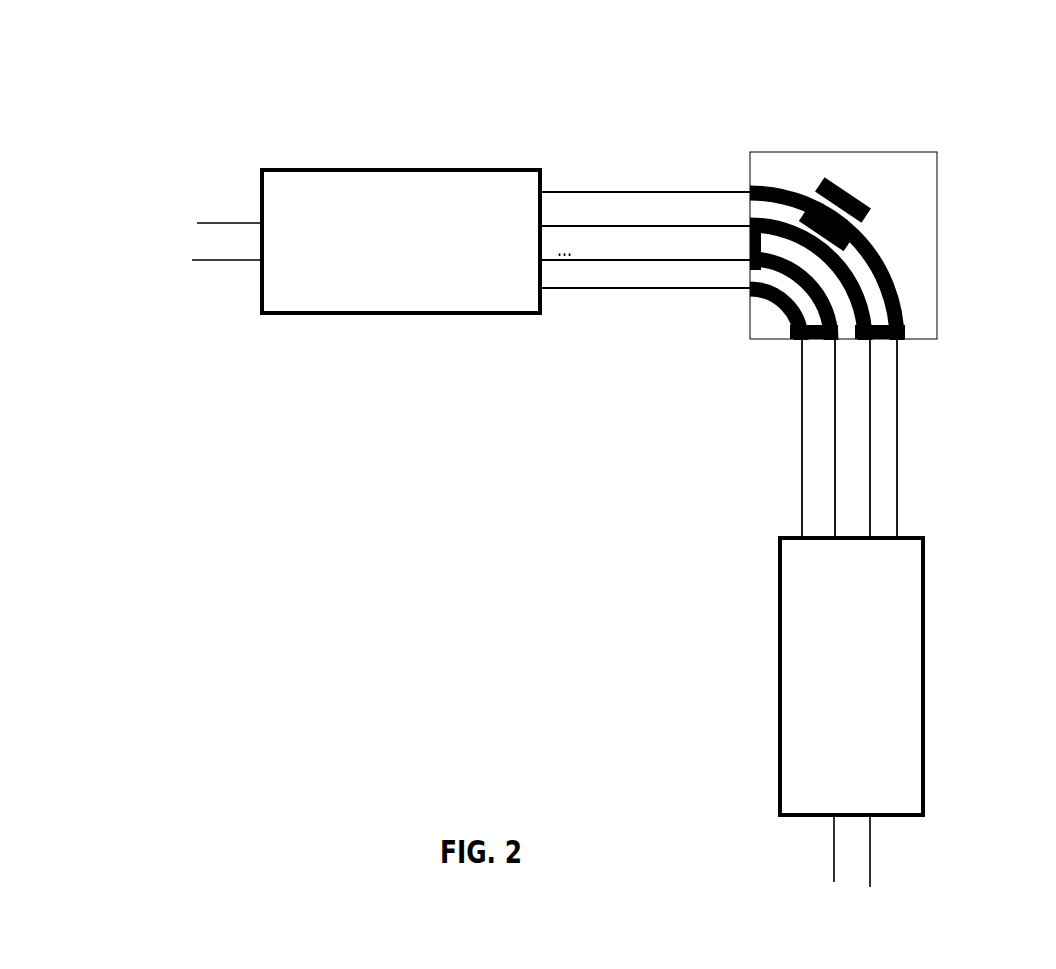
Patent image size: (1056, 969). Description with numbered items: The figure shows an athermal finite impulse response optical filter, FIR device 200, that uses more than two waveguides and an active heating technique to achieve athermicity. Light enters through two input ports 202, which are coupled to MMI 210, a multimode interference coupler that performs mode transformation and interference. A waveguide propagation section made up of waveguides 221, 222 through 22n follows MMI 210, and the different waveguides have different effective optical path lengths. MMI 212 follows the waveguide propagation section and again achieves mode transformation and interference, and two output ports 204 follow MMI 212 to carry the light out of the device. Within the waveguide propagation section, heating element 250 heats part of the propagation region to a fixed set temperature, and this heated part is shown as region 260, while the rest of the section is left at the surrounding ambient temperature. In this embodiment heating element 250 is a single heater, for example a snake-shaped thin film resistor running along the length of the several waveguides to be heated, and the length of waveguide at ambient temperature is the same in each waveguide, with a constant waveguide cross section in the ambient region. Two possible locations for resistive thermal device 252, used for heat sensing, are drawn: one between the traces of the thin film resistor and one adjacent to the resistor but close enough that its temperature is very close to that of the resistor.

The FIR device 200 is at (315, 500).
The input ports 202 is at (231, 189).
The output ports 204 is at (899, 847).
The MMI 210 is at (401, 241).
The MMI 212 is at (851, 676).
The waveguide 221 is at (645, 178).
The waveguide 222 is at (645, 214).
The waveguide 22n is at (645, 277).
The heating element 250 is at (899, 246).
The resistive thermal device (RTD) 252 is at (835, 170).
The region 260 is at (905, 151).